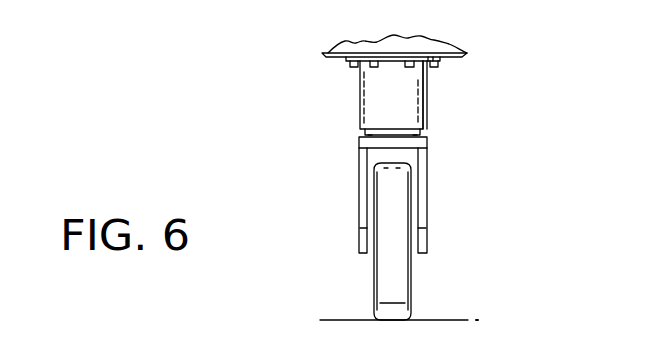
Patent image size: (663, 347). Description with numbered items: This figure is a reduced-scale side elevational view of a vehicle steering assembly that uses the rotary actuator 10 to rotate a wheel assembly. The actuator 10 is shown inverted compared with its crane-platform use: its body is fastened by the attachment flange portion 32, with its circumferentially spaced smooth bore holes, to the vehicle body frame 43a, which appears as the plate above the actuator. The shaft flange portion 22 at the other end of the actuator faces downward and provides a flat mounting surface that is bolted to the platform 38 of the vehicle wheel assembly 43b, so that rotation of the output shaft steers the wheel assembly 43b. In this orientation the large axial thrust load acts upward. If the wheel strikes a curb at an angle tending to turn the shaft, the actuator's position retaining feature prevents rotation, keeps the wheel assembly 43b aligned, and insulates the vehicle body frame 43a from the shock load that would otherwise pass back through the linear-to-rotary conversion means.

The rotary actuator 10 is at (423, 93).
The shaft flange portion 22 is at (425, 123).
The attachment flange portion 32 is at (347, 63).
The platform 38 is at (427, 147).
The vehicle body frame 43a is at (333, 57).
The vehicle wheel assembly 43b is at (427, 197).